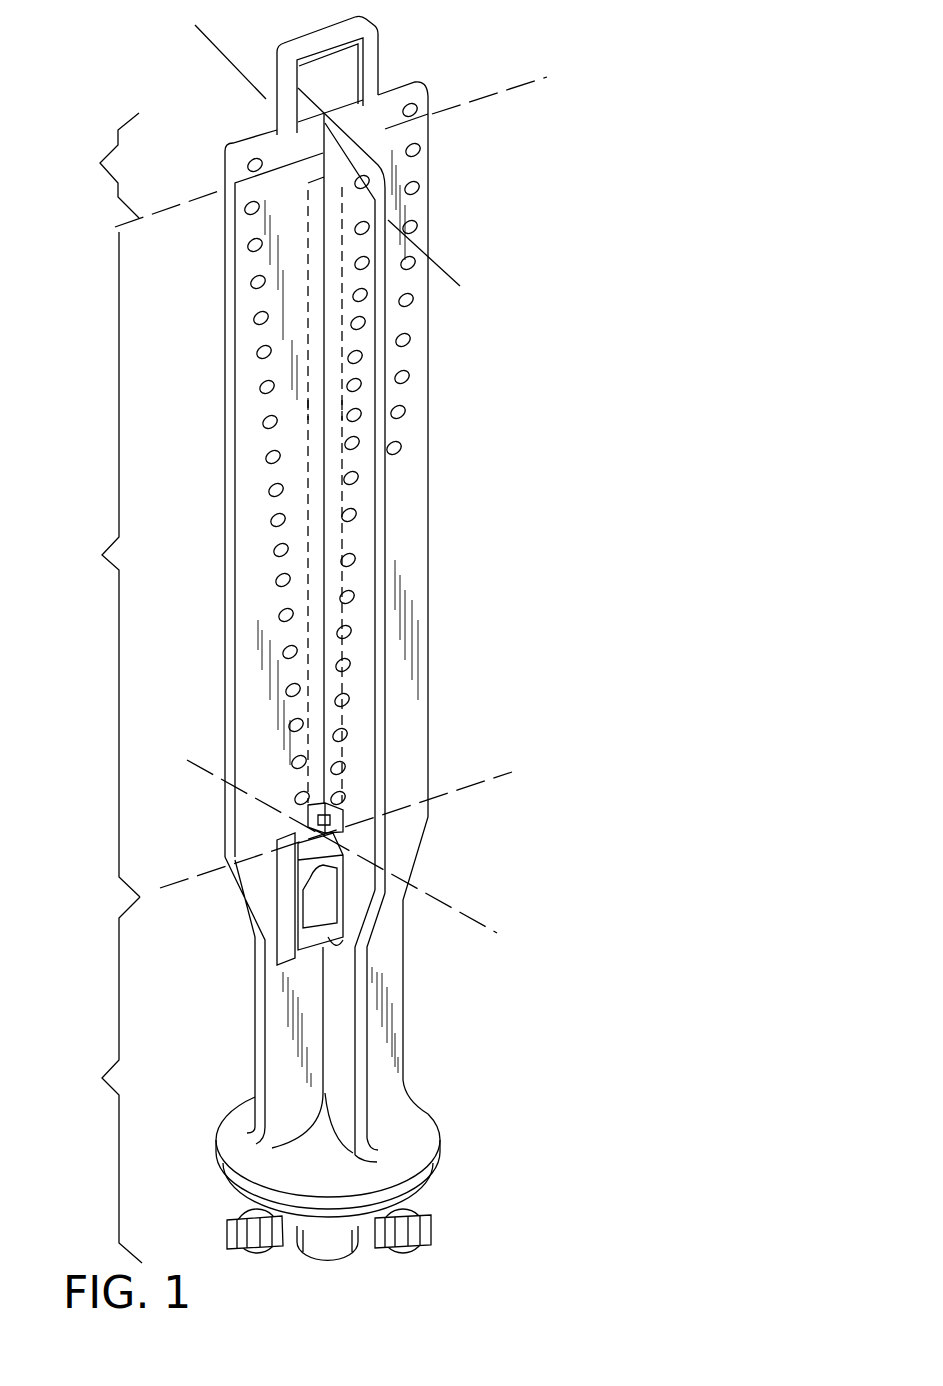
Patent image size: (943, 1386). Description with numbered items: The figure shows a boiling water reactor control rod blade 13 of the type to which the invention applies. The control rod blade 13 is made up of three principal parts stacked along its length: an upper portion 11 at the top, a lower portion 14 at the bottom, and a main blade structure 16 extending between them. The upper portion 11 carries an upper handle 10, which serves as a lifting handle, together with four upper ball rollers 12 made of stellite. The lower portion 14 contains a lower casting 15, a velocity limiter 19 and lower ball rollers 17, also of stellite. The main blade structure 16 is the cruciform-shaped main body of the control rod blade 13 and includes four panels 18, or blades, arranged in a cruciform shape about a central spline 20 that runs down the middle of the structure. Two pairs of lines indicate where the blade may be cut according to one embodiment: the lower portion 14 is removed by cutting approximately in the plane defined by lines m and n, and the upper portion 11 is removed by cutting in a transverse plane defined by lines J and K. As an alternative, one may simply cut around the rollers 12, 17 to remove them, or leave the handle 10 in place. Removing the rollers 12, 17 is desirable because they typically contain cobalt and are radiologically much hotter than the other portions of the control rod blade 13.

The upper handle 10 is at (303, 36).
The upper portion 11 is at (104, 165).
The upper ball rollers 12 is at (250, 167).
The boiling water reactor control rod blade 13 is at (468, 421).
The lower portion 14 is at (106, 1080).
The lower casting 15 is at (408, 1043).
The main blade structure 16 is at (105, 564).
The lower ball rollers 17 is at (240, 1213).
The panels 18 is at (262, 117).
The velocity limiter 19 is at (410, 1127).
The central spline 20 is at (345, 371).
The line j J is at (339, 145).
The line k K is at (338, 165).
The line m is at (352, 822).
The line n is at (355, 855).